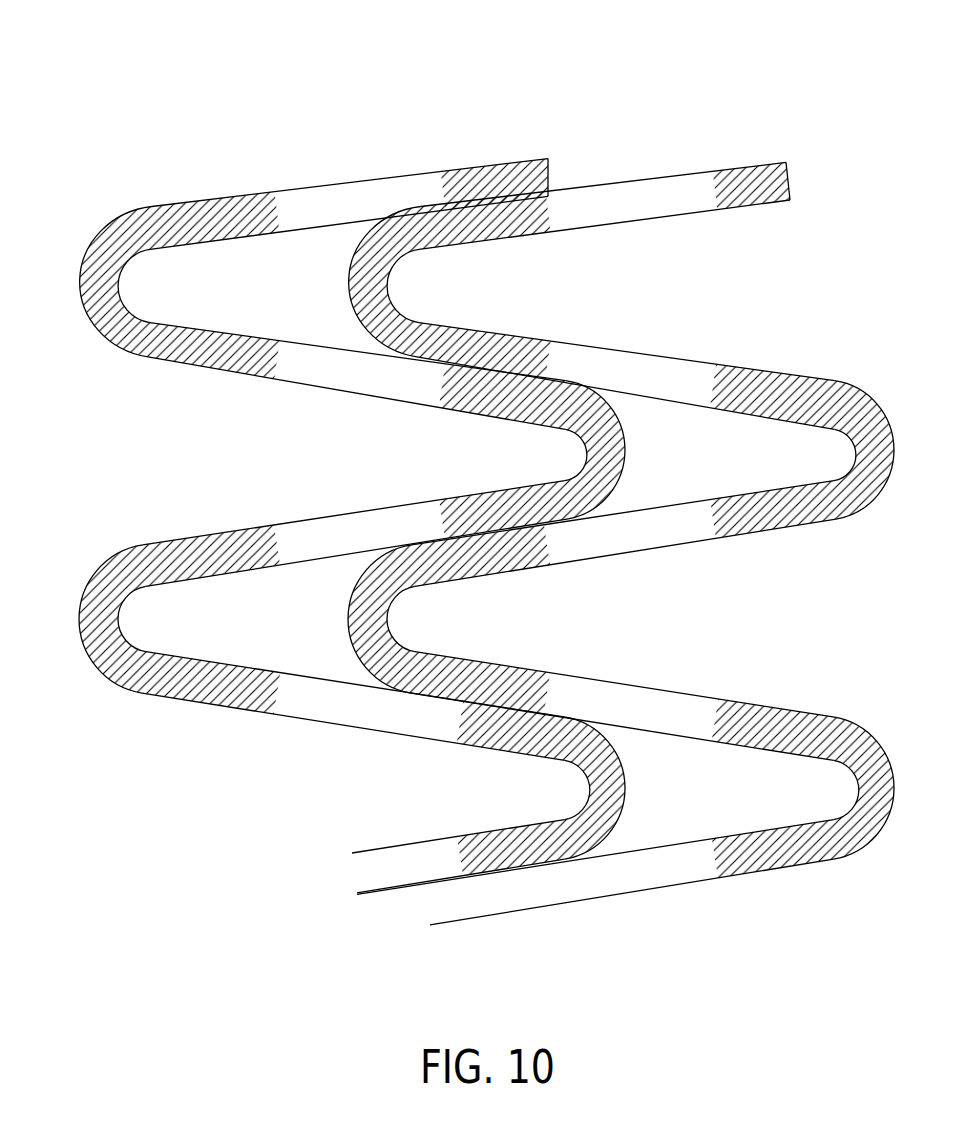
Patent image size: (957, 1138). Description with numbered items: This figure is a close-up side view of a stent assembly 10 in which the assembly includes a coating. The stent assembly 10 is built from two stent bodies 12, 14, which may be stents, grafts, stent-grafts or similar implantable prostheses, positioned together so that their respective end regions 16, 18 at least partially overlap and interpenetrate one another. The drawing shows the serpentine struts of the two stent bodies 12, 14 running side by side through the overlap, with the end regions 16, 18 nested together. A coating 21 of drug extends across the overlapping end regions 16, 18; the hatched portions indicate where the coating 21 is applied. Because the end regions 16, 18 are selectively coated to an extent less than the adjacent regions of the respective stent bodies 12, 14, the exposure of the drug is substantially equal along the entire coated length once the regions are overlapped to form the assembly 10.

The stent assembly 10 is at (617, 126).
The stent body 12 is at (757, 368).
The stent body 14 is at (176, 205).
The end region 16 is at (604, 568).
The end region 18 is at (371, 732).
The coating 21 is at (835, 388).